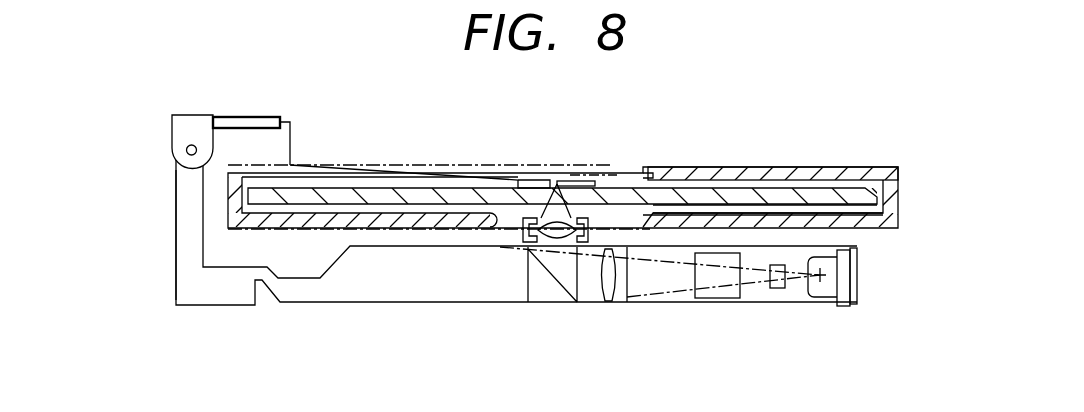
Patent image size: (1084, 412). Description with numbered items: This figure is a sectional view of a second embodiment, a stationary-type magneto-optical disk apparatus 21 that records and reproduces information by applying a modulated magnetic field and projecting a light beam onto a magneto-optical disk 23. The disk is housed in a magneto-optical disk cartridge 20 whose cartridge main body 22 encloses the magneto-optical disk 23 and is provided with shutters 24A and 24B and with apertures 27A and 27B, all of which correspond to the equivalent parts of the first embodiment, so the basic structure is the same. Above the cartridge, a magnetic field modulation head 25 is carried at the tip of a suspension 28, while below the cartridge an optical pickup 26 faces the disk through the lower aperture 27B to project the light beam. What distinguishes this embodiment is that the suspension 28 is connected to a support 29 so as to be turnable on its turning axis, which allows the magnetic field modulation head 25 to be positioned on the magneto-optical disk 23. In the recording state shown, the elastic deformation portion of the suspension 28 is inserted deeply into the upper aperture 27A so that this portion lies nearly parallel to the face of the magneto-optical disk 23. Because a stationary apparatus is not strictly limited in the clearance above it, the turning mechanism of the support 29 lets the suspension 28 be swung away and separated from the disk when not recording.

The magneto-optical disk cartridge 20 is at (813, 167).
The magneto-optical disk apparatus 21 is at (237, 311).
The cartridge main body 22 is at (883, 200).
The magneto-optical disk 23 is at (858, 207).
The shutter 24A is at (229, 167).
The shutter 24B is at (229, 228).
The magnetic field modulation head 25 is at (574, 178).
The optical pickup 26 is at (503, 304).
The aperture 27A is at (652, 169).
The aperture 27B is at (506, 222).
The suspension 28 is at (292, 136).
The support 29 is at (175, 229).